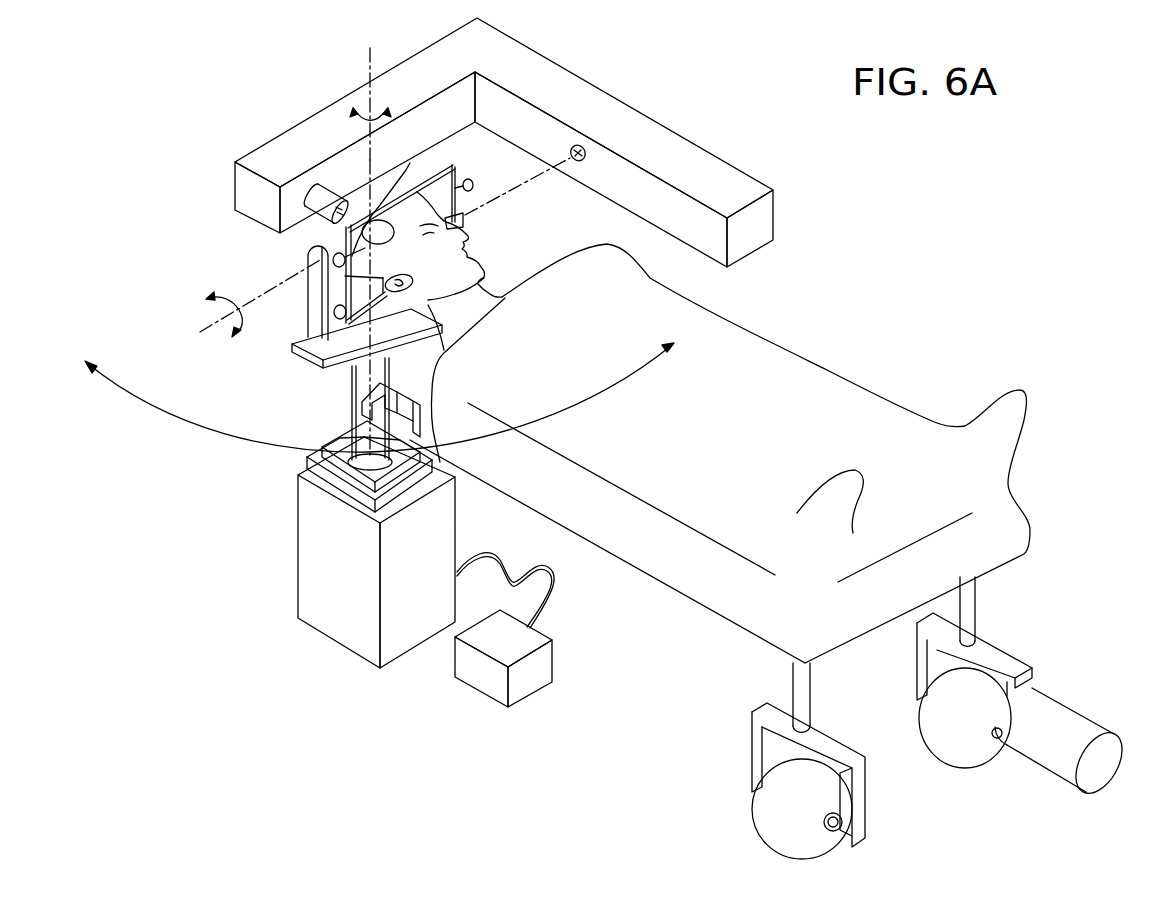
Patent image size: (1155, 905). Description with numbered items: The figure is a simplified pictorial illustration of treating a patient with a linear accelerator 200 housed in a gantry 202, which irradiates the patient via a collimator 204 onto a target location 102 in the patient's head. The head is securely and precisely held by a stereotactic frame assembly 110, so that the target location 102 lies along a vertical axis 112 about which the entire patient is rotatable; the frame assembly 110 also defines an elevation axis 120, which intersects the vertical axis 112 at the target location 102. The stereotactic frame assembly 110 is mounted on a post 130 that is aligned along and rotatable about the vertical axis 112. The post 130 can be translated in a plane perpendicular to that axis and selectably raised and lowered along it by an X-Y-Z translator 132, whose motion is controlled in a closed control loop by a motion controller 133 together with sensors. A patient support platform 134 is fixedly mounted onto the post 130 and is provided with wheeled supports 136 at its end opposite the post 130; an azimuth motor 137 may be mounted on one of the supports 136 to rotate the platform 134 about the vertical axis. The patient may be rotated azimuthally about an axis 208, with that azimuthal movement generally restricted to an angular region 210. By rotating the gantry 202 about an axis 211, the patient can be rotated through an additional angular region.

The target location 102 is at (404, 190).
The stereotactic frame assembly 110 is at (462, 156).
The vertical axis 112 is at (369, 155).
The elevation axis 120 is at (267, 287).
The post 130 is at (357, 386).
The X-Y-Z translator 132 is at (333, 622).
The motion controller 133 is at (542, 667).
The patient support platform 134 is at (422, 393).
The wheeled supports 136 is at (768, 817).
The azimuth motor 137 is at (1068, 717).
The linear accelerator 200 is at (745, 176).
The gantry 202 is at (768, 211).
The collimator 204 is at (305, 209).
The azimuthal axis 208 is at (369, 60).
The angular region 210 is at (213, 428).
The gantry rotation axis 211 is at (567, 162).